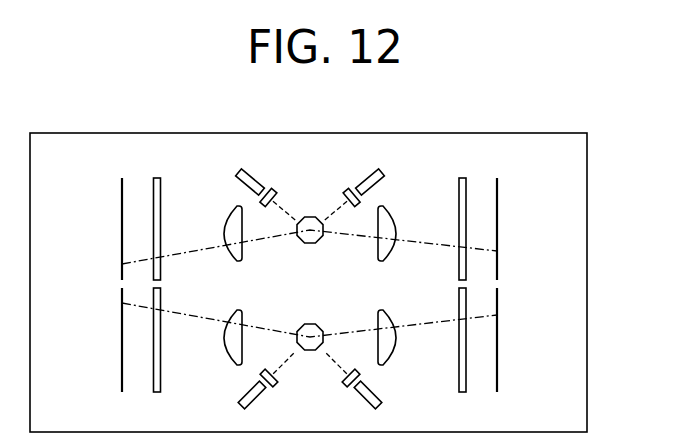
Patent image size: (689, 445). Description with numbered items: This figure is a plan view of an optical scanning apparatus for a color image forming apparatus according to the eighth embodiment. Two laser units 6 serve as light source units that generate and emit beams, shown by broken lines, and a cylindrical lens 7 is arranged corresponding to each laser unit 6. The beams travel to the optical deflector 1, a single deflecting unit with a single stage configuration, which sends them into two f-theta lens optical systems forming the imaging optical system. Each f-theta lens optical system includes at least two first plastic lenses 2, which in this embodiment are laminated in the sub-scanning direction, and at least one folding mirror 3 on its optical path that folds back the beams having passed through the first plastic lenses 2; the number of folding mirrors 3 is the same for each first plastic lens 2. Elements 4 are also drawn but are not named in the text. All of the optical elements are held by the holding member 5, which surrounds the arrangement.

The optical deflector 1 is at (311, 216).
The first plastic lens 2 is at (227, 252).
The folding mirror 3 is at (162, 201).
The reflecting plate 4 is at (120, 201).
The holding member 5 is at (585, 272).
The laser unit 6 is at (240, 174).
The cylindrical lens 7 is at (258, 196).